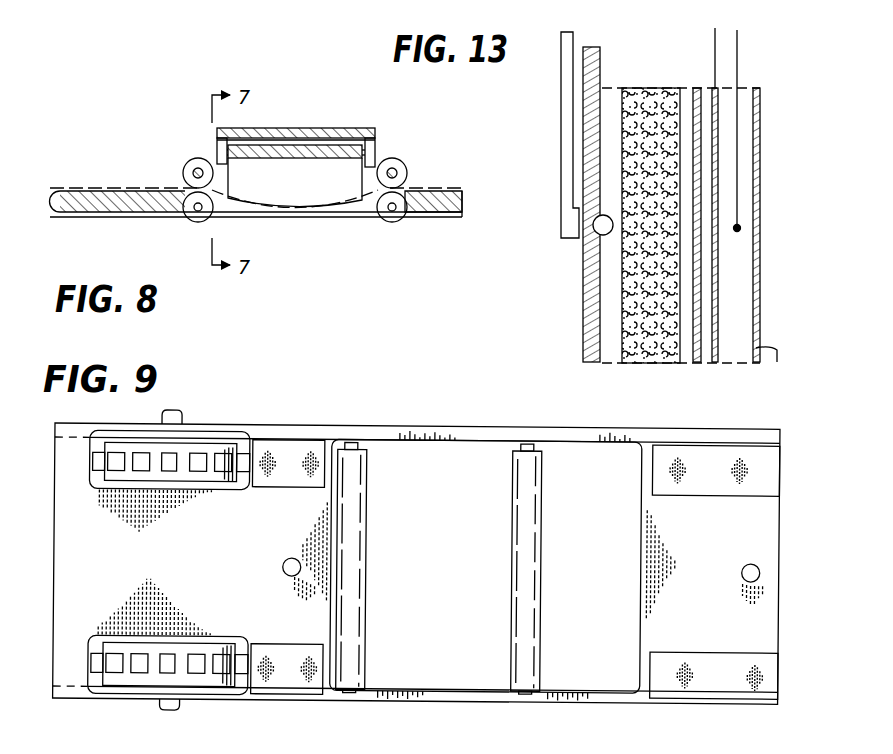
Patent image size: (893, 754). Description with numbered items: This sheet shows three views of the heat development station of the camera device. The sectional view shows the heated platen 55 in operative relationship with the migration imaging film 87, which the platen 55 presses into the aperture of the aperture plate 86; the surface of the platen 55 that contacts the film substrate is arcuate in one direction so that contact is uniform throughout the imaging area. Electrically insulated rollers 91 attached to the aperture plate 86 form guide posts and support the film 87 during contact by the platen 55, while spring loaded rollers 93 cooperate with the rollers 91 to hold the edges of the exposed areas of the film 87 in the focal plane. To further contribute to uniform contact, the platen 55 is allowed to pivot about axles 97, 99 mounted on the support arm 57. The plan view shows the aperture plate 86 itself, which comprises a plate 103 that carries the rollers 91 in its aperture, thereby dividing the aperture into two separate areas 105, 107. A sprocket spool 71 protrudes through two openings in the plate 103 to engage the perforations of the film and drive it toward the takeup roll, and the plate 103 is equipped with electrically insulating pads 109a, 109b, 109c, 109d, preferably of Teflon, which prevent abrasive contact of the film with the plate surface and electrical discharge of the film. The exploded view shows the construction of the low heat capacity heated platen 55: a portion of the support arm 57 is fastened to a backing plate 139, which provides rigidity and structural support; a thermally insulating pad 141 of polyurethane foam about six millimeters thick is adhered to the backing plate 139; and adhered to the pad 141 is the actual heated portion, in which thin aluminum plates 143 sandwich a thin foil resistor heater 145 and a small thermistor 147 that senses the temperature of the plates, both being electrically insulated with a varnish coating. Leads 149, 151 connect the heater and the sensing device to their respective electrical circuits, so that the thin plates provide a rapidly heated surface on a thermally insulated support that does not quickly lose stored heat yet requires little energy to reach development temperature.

In FIG. 8, the platen 55 is at (296, 190).
In FIG. 13, the platen 55 is at (553, 130).
In FIG. 8, the support arm 57 is at (340, 128).
In FIG. 13, the support arm 57 is at (561, 98).
In FIG. 9, the sprocket spool 71 is at (203, 448).
In FIG. 8, the aperture plate 86 is at (452, 218).
In FIG. 9, the aperture plate 86 is at (357, 410).
In FIG. 8, the film 87 is at (312, 204).
In FIG. 8, the electrically insulated rollers 91 is at (190, 221).
In FIG. 9, the electrically insulated rollers 91 is at (367, 558).
In FIG. 8, the spring loaded rollers 93 is at (186, 165).
In FIG. 8, the axle 97 is at (372, 150).
In FIG. 13, the axle 97 is at (597, 231).
In FIG. 8, the axle 99 is at (226, 150).
In FIG. 9, the plate 103 is at (658, 518).
In FIG. 9, the aperture area 105 is at (596, 465).
In FIG. 9, the aperture area 107 is at (480, 465).
In FIG. 9, the electrically insulating pad 109a is at (747, 413).
In FIG. 9, the electrically insulating pad 109b is at (740, 683).
In FIG. 9, the electrically insulating pad 109c is at (298, 678).
In FIG. 9, the electrically insulating pad 109d is at (295, 448).
In FIG. 13, the backing plate 139 is at (583, 302).
In FIG. 13, the thermally insulating pad 141 is at (636, 95).
In FIG. 13, the aluminum plates 143 is at (697, 364).
In FIG. 13, the resistor heater 145 is at (715, 297).
In FIG. 13, the thermistor 147 is at (737, 228).
In FIG. 13, the lead 149 is at (715, 40).
In FIG. 13, the lead 151 is at (740, 42).